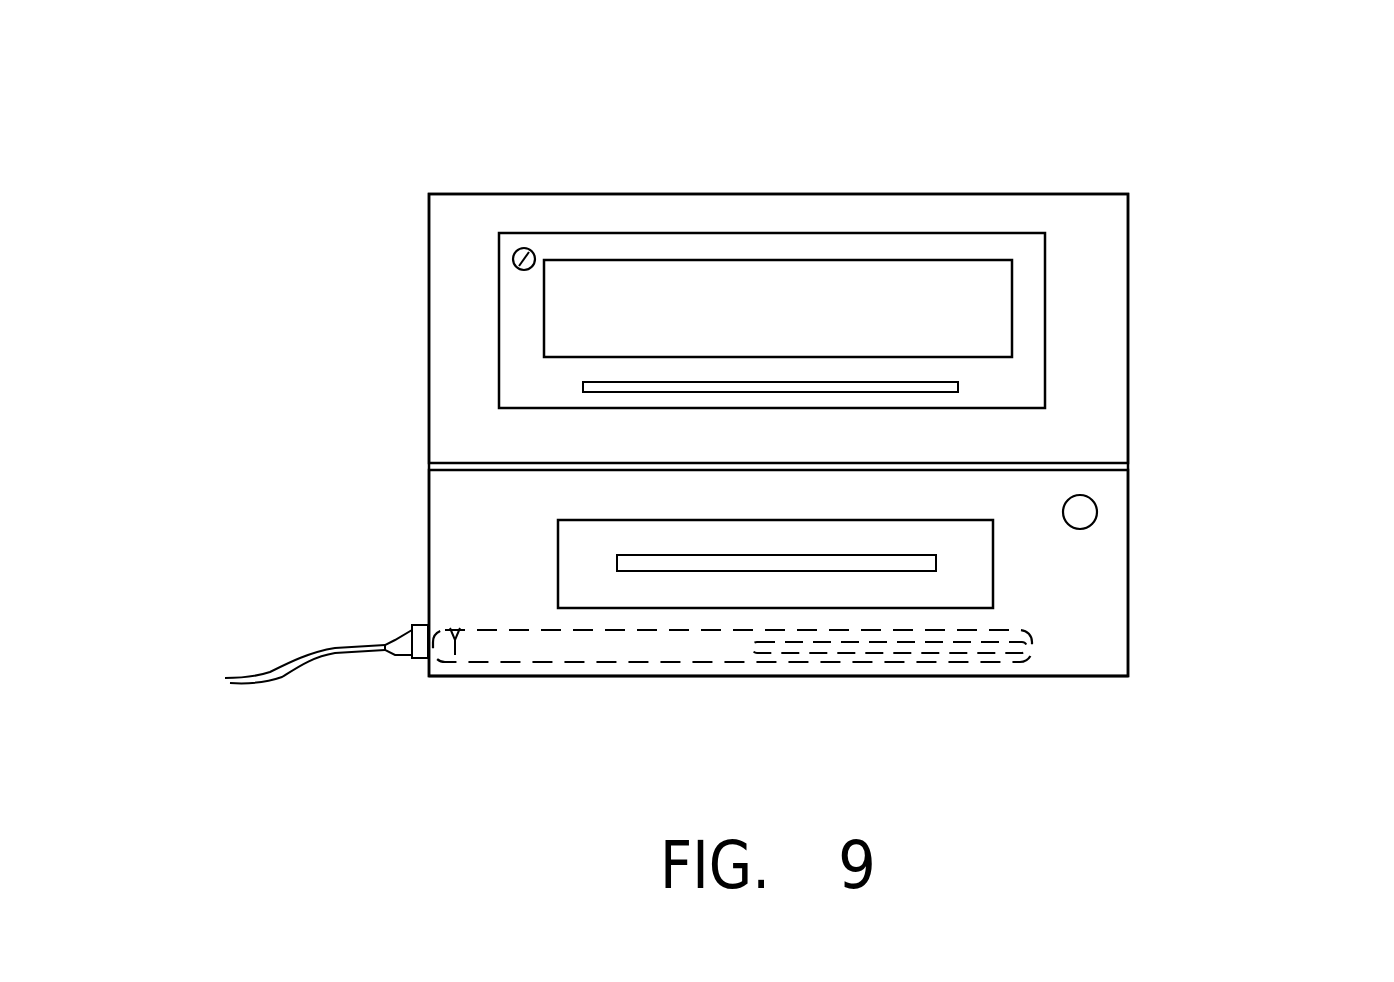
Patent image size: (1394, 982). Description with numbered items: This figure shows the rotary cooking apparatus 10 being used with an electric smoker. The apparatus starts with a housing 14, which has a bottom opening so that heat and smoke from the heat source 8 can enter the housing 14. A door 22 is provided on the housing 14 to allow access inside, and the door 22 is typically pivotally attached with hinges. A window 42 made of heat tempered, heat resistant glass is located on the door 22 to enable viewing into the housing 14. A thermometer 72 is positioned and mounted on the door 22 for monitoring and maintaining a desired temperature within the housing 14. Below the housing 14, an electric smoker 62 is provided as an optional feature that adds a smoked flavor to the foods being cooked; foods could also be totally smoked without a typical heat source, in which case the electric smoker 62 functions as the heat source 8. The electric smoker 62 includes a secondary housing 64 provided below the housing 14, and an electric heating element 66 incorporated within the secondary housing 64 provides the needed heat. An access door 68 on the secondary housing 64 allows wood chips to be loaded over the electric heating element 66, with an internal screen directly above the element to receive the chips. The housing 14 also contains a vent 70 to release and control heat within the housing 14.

The rotary cooking apparatus 10 is at (1292, 196).
The housing 14 is at (1130, 308).
The door 22 is at (872, 249).
The window 42 is at (571, 293).
The thermometer 72 is at (530, 247).
The electric smoker 62 is at (1226, 572).
The secondary housing 64 is at (1080, 590).
The access door 68 is at (592, 552).
The vent 70 is at (1093, 507).
The electric heating element 66 is at (748, 655).
The heat source 8 is at (421, 583).